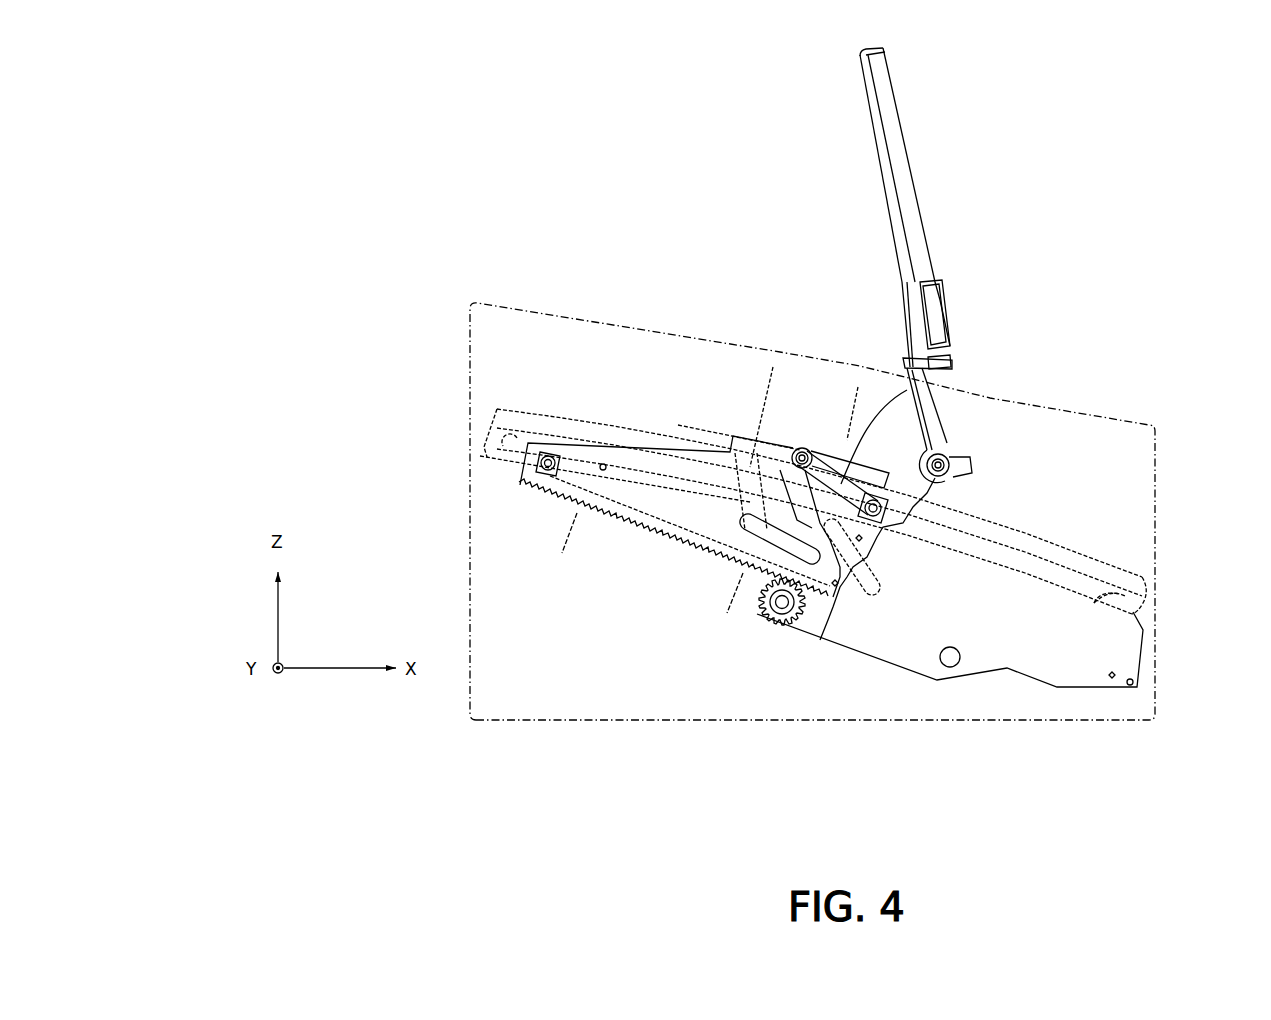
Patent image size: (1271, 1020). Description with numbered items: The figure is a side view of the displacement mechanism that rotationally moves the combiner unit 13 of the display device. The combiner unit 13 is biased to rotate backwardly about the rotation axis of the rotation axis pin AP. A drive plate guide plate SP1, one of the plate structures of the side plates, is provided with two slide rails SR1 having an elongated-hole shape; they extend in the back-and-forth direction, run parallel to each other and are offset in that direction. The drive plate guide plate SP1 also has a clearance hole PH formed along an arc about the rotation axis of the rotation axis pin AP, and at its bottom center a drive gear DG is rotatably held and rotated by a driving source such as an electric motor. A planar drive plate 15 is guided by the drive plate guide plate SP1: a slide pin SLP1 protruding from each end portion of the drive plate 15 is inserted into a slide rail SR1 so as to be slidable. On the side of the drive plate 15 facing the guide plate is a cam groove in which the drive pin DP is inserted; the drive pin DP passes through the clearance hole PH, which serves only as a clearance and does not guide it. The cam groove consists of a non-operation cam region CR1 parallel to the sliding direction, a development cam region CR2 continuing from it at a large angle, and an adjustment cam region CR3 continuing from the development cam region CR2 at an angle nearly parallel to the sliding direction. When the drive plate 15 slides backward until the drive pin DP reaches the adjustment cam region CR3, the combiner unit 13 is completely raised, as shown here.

The combiner unit 13 is at (973, 100).
The drive plate 15 is at (607, 445).
The slide rail SR1 is at (518, 440).
The slide pin SLP1 is at (577, 462).
The drive pin DP is at (795, 450).
The rotation axis pin AP is at (973, 455).
The clearance hole PH is at (876, 590).
The drive gear DG is at (765, 610).
The drive plate guide plate SP1 is at (1112, 567).
The non-operation cam region CR1 is at (727, 600).
The development cam region CR2 is at (693, 438).
The adjustment cam region CR3 is at (850, 421).